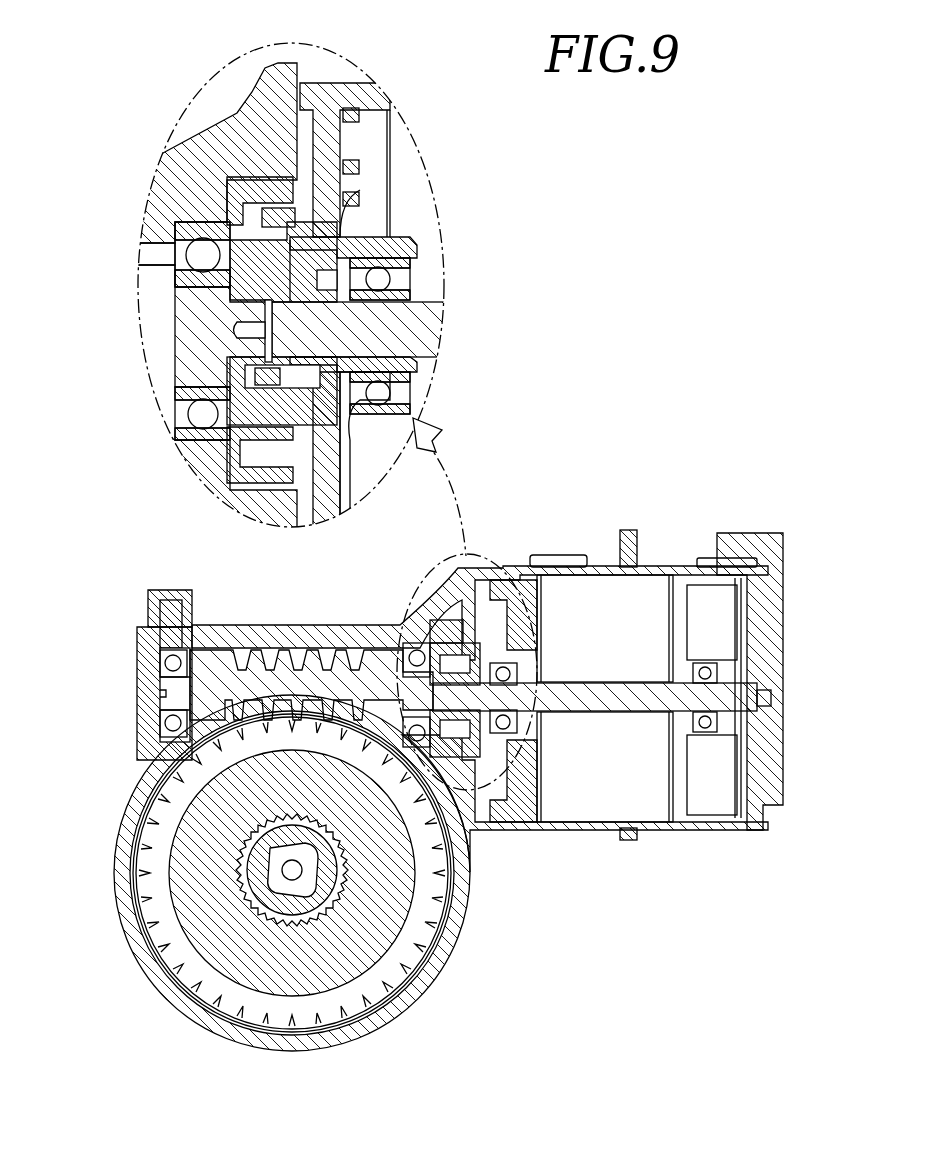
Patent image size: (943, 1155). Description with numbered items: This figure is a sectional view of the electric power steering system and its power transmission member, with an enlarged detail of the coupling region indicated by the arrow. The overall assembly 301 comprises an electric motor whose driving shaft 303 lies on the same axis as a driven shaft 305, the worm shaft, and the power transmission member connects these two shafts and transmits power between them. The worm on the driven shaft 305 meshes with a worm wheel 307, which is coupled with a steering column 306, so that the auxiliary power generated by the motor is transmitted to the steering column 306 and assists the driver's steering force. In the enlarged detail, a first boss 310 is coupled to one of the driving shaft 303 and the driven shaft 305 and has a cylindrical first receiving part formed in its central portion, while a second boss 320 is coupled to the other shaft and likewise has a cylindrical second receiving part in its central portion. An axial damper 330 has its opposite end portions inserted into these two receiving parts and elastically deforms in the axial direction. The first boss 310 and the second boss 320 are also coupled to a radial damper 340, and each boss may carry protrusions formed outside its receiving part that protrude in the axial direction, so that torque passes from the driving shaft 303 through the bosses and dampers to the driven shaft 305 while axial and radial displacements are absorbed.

The actuator assembly 301 is at (702, 490).
The driving shaft 303 is at (413, 332).
The driven shaft 305 is at (173, 327).
The steering column 306 is at (430, 963).
The worm wheel 307 is at (340, 886).
The first boss 310 is at (250, 247).
The second boss 320 is at (318, 283).
The axial damper 330 is at (322, 252).
The radial damper 340 is at (278, 210).